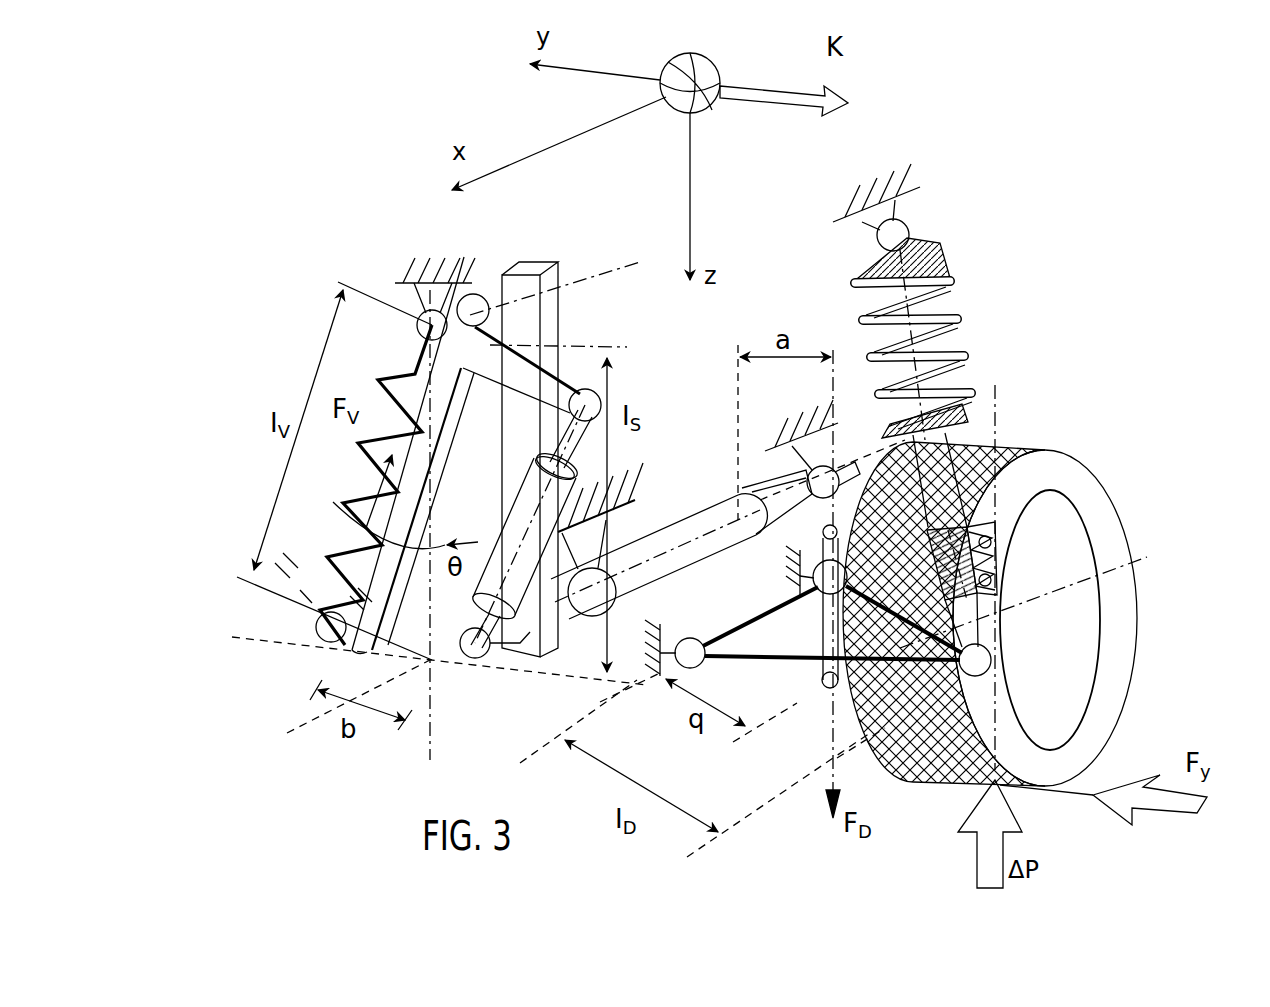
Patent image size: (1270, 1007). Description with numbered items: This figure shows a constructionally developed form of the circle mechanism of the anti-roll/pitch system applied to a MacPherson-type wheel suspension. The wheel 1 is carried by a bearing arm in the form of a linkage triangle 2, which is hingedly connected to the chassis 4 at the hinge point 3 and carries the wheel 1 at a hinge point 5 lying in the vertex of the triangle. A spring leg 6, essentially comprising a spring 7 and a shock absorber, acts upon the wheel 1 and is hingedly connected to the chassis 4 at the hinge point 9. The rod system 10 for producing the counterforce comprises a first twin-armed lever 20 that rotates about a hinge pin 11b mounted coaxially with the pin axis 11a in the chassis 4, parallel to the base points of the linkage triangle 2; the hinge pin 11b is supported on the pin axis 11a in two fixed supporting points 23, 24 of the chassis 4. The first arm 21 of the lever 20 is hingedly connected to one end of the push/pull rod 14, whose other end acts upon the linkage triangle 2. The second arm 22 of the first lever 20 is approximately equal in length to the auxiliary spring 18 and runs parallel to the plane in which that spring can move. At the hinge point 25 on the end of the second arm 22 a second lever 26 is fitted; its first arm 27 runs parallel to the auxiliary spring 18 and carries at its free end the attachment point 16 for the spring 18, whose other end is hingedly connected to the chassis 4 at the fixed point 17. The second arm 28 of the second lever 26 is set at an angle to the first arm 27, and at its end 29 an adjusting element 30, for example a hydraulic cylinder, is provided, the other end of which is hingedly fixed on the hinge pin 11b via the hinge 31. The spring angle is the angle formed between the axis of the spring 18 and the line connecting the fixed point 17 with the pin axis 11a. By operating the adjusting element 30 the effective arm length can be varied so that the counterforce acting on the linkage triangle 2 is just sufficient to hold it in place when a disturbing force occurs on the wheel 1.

The wheel 1 is at (1112, 536).
The linkage triangle 2 is at (822, 650).
The hinge point 3 is at (690, 637).
The chassis 4 is at (438, 265).
The hinge point 5 is at (942, 774).
The spring leg 6 is at (962, 309).
The spring 7 is at (945, 285).
The hinge point 9 is at (908, 232).
The rod system 10 is at (571, 655).
The pin axis 11a is at (303, 735).
The hinge pin 11b is at (683, 530).
The push/pull rod 14 is at (782, 668).
The attachment point 16 is at (320, 641).
The fixed point 17 is at (415, 323).
The auxiliary spring 18 is at (372, 452).
The first twin-armed lever 20 is at (683, 568).
The first arm 21 is at (745, 490).
The second arm 22 is at (548, 270).
The fixed supporting point 23 is at (592, 537).
The fixed supporting point 24 is at (808, 470).
The hinge point 25 is at (480, 298).
The second lever 26 is at (488, 360).
The first arm 27 is at (313, 593).
The second arm 28 is at (553, 348).
The end 29 is at (618, 397).
The adjusting element 30 is at (520, 505).
The hinge 31 is at (478, 659).